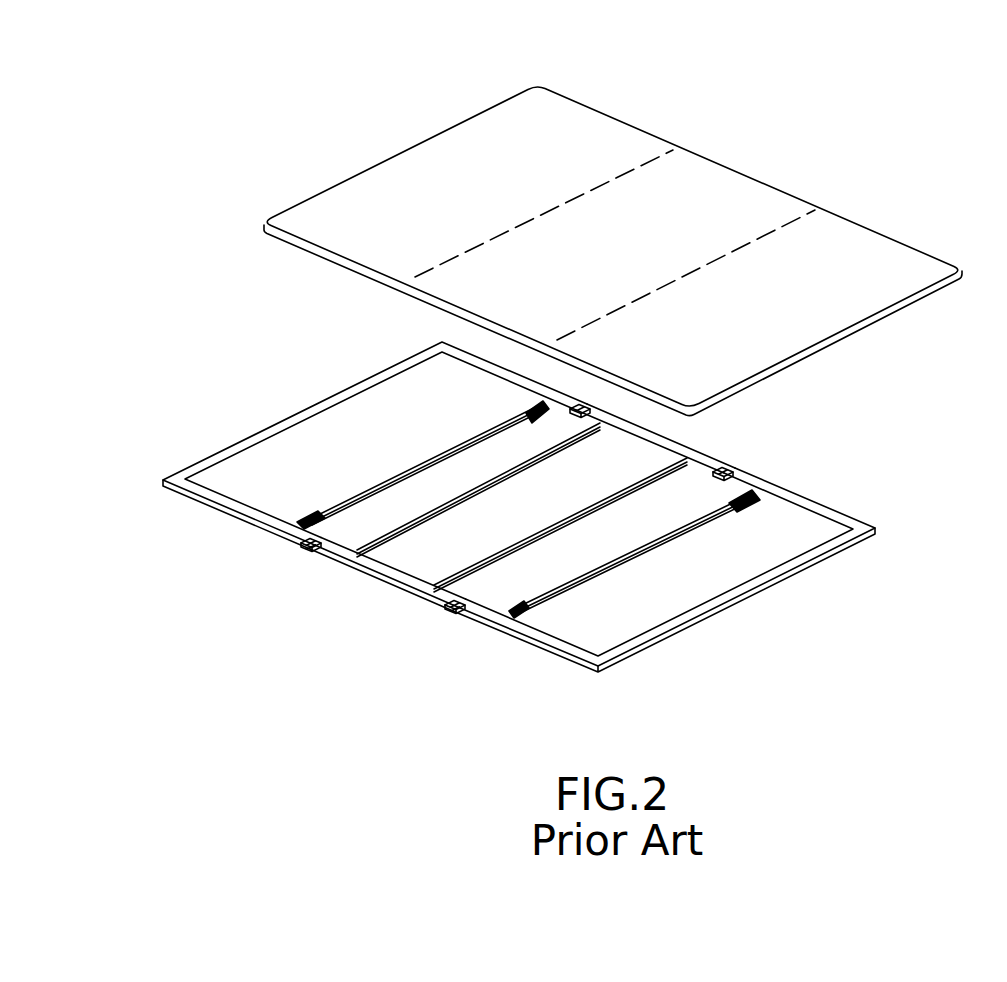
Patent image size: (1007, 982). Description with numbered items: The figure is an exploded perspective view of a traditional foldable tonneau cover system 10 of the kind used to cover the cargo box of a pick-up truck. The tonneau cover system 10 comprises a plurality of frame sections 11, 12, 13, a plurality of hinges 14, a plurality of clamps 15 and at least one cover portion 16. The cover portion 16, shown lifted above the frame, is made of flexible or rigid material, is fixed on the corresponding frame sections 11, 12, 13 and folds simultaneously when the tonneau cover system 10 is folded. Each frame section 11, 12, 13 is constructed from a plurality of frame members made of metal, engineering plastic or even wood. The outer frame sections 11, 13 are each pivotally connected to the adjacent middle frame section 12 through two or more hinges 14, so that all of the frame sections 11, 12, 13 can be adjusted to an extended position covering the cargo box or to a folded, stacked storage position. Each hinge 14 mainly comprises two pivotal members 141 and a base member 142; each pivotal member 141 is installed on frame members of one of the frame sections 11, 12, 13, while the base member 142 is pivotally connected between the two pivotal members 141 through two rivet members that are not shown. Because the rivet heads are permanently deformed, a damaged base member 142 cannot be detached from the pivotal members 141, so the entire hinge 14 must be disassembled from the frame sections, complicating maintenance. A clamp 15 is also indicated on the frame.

The tonneau cover system 10 is at (716, 130).
The frame section 11 is at (207, 502).
The frame section 12 is at (356, 570).
The frame section 13 is at (540, 648).
The hinge 14 is at (192, 564).
The pivotal member 141 is at (302, 540).
The base member 142 is at (308, 549).
The clamp 15 is at (760, 516).
The cover portion 16 is at (850, 234).